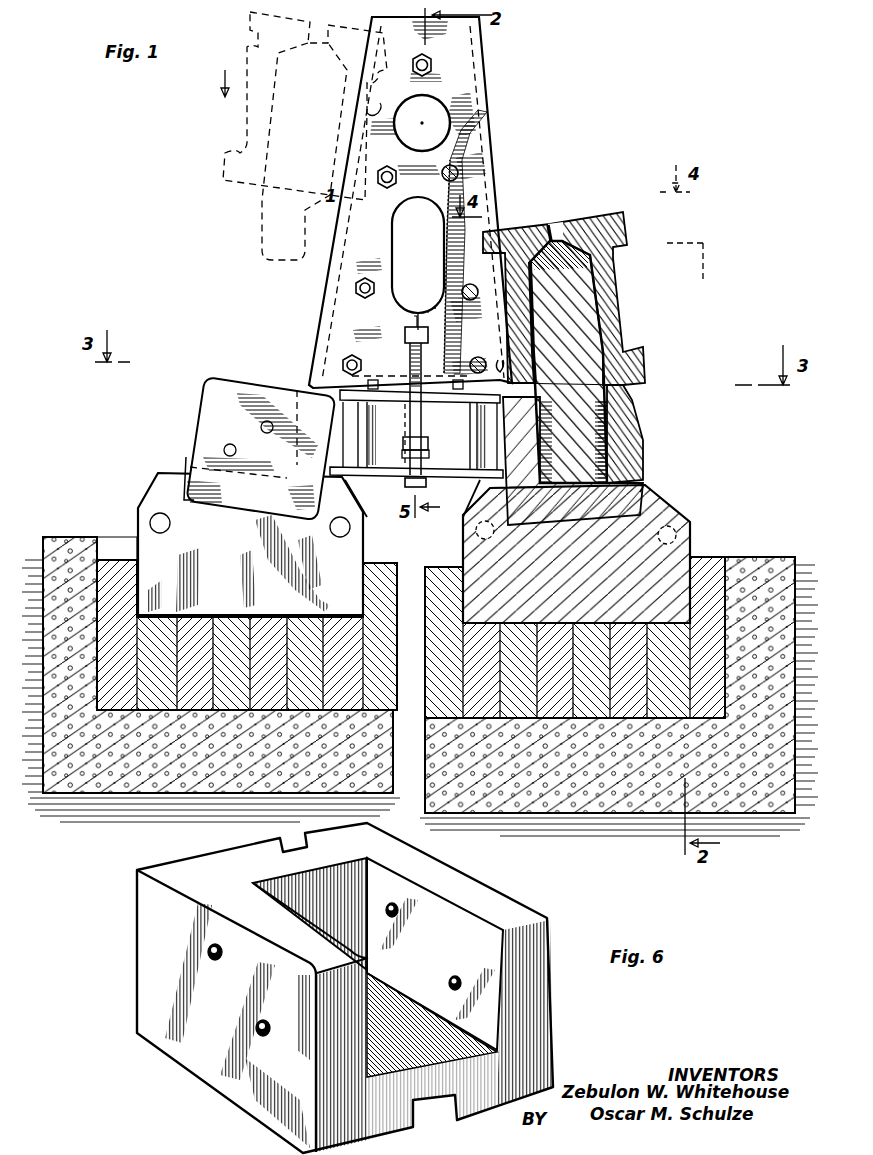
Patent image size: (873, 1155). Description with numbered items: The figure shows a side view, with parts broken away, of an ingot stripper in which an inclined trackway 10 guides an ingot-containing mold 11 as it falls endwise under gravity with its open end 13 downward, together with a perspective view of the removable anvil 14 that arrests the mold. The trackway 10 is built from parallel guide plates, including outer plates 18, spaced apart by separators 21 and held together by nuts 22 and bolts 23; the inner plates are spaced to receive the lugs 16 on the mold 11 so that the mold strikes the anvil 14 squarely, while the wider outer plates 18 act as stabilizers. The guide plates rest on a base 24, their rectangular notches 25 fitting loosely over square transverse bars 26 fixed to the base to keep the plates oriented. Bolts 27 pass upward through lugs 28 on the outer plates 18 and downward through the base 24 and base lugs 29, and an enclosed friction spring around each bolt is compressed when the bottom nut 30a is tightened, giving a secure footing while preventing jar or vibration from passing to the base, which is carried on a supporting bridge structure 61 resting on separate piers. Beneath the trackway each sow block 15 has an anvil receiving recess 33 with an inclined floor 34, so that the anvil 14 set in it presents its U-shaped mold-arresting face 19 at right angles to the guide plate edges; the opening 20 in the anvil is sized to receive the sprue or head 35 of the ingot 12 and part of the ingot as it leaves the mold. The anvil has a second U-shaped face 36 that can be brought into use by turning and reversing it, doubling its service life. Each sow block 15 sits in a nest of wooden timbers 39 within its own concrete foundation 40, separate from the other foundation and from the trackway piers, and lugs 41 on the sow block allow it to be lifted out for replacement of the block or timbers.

In FIG. 1, the inclined trackway 10 is at (328, 272).
In FIG. 1, the ingot-containing mold 11 is at (245, 125).
In FIG. 1, the ingot 12 is at (262, 196).
In FIG. 1, the open end 13 is at (262, 190).
In FIG. 1, the anvil 14 is at (573, 510).
In FIG. 6, the anvil 14 is at (548, 922).
In FIG. 1, the sow block 15 is at (414, 548).
In FIG. 1, the lugs 16 is at (248, 29).
In FIG. 1, the outer plates 18 is at (432, 116).
In FIG. 1, the mold-arresting face 19 is at (255, 377).
In FIG. 6, the mold-arresting face 19 is at (347, 880).
In FIG. 1, the opening 20 is at (215, 378).
In FIG. 6, the opening 20 is at (440, 973).
In FIG. 1, the separators 21 is at (478, 357).
In FIG. 1, the nuts 22 is at (434, 64).
In FIG. 1, the bolts 23 is at (430, 57).
In FIG. 1, the base 24 is at (397, 404).
In FIG. 1, the rectangular notches 25 is at (468, 386).
In FIG. 1, the square transverse bars 26 is at (372, 405).
In FIG. 1, the bolts 27 is at (426, 485).
In FIG. 1, the lugs 28 is at (410, 360).
In FIG. 1, the base lugs 29 is at (428, 440).
In FIG. 1, the bottom nut 30a is at (410, 482).
In FIG. 1, the anvil receiving recess 33 is at (186, 470).
In FIG. 1, the inclined floor 34 is at (225, 508).
In FIG. 1, the sprue or head 35 is at (262, 236).
In FIG. 1, the U-shaped face 36 is at (200, 410).
In FIG. 6, the U-shaped face 36 is at (432, 1059).
In FIG. 1, the wooden timbers 39 is at (200, 673).
In FIG. 1, the concrete foundation 40 is at (200, 745).
In FIG. 1, the lugs 41 is at (160, 533).
In FIG. 1, the supporting bridge structure 61 is at (456, 463).